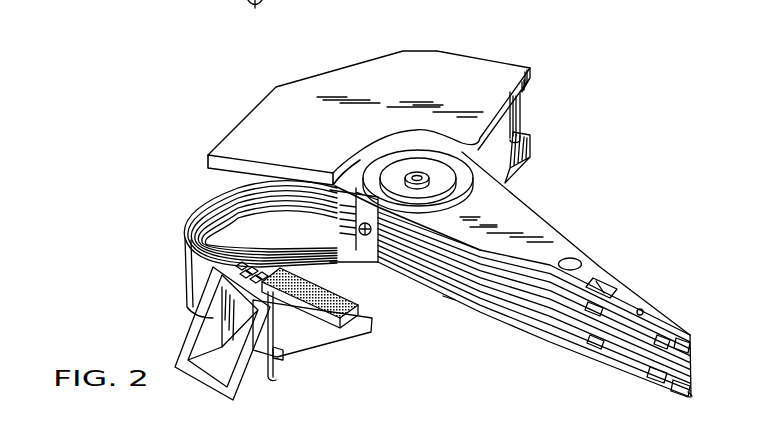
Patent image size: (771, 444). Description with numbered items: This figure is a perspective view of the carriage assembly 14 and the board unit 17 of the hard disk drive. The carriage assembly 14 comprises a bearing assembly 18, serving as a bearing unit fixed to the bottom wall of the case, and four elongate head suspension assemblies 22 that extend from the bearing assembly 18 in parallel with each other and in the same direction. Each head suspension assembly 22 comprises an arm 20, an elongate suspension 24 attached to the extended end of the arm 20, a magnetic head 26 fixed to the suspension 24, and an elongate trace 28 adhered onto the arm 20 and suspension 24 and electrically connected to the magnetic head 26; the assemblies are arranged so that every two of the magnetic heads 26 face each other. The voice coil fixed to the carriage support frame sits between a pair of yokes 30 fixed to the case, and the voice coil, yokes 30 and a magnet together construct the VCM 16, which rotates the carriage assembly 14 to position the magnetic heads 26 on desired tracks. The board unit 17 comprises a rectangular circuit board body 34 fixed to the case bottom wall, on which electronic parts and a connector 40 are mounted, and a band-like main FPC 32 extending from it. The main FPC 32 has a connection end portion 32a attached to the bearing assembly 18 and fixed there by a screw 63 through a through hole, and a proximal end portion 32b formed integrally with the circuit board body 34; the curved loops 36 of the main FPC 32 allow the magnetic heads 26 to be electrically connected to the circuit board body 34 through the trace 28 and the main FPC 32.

The carriage assembly 14 is at (588, 216).
The VCM 16 is at (382, 51).
The board unit 17 is at (177, 291).
The bearing assembly 18 is at (484, 181).
The arm 20 is at (520, 225).
The head suspension assembly 22 is at (612, 267).
The suspension 24 is at (655, 316).
The magnetic head 26 is at (697, 340).
The trace 28 is at (455, 300).
The yoke 30 is at (272, 108).
The main flexible printed circuit board 32 is at (190, 262).
The connection end portion 32a is at (350, 195).
The proximal end portion 32b is at (280, 320).
The circuit board body 34 is at (318, 347).
The flexible cable loops 36 is at (222, 207).
The connector 40 is at (355, 322).
The screw 63 is at (366, 255).